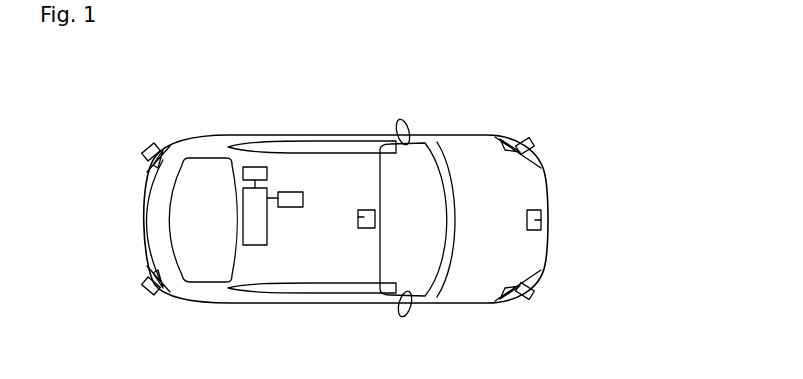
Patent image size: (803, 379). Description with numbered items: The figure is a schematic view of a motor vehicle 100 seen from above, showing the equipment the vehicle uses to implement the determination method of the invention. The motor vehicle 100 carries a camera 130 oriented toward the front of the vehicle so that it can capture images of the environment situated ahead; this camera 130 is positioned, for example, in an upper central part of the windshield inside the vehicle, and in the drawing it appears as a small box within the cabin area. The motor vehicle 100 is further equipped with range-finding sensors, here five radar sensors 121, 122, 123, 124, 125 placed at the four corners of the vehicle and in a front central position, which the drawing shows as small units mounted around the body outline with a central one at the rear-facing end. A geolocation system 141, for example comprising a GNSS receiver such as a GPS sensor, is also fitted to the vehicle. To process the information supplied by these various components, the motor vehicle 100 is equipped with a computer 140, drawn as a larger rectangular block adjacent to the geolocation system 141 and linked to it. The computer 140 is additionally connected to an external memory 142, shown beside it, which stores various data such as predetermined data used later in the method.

The motor vehicle 100 is at (578, 168).
The radar sensor 121 is at (539, 141).
The radar sensor 122 is at (541, 220).
The radar sensor 123 is at (547, 300).
The radar sensor 124 is at (147, 287).
The radar sensor 125 is at (144, 153).
The camera 130 is at (358, 217).
The computer 140 is at (254, 238).
The geolocation system 141 is at (251, 167).
The external memory 142 is at (296, 192).